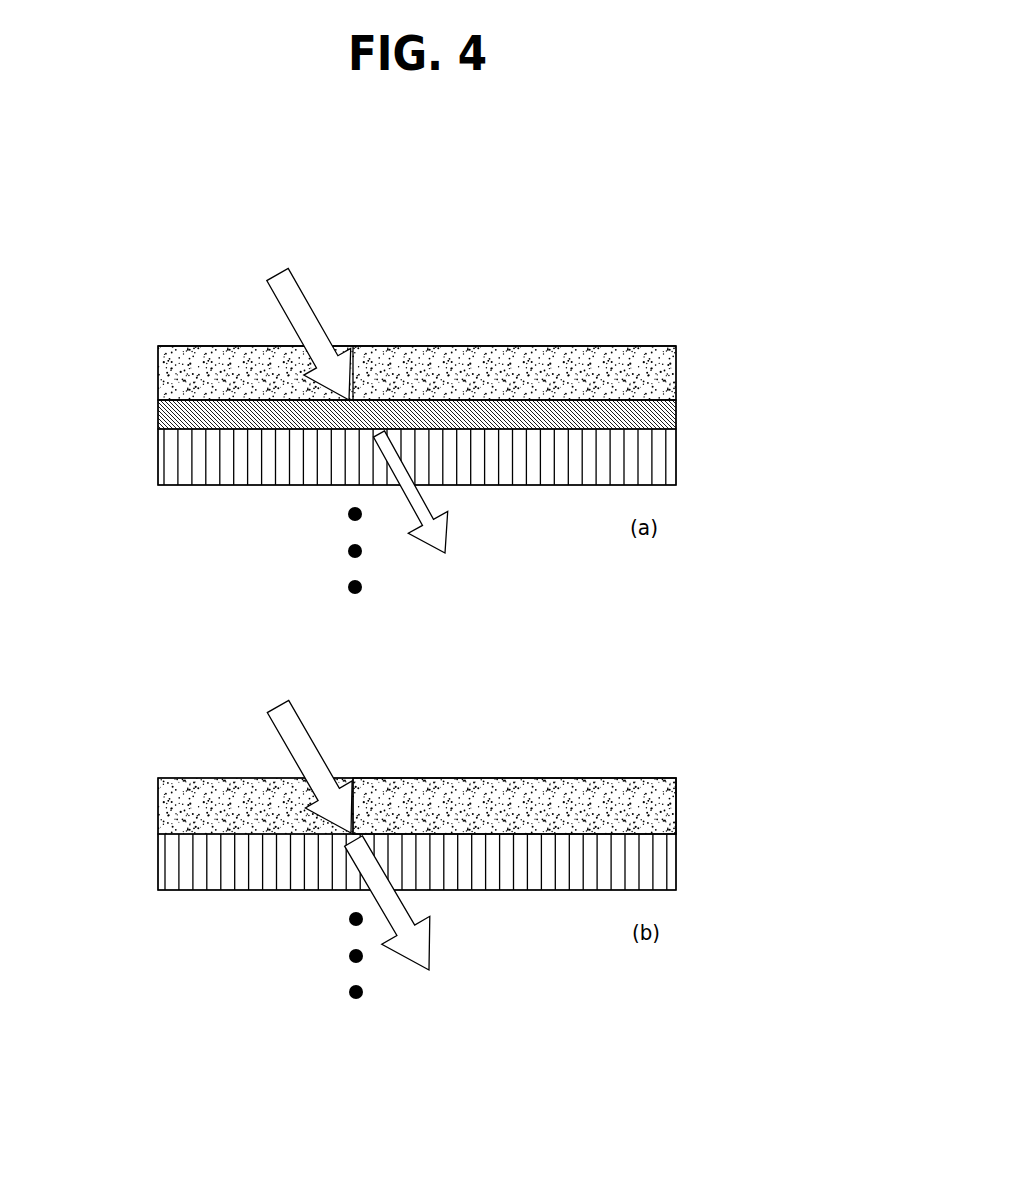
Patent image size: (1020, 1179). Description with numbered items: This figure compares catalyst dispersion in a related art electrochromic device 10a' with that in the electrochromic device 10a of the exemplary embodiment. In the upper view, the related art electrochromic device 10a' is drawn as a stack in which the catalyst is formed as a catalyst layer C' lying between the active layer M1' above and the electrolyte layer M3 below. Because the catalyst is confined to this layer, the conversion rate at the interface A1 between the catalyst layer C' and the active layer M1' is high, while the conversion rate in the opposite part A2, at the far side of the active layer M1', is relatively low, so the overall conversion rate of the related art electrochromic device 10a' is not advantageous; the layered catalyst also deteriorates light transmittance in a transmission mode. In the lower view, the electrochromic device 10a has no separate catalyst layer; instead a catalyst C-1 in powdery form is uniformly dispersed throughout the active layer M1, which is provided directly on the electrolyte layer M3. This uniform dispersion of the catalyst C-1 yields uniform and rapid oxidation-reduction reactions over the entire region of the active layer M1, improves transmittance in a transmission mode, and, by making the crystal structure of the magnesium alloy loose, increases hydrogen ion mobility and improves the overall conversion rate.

The related art electrochromic device 10a' is at (417, 361).
The opposite part A2 is at (157, 346).
The interface A1 is at (157, 400).
The active layer M1' is at (455, 373).
The catalyst layer C' is at (447, 414).
The electrolyte layer M3 is at (676, 457).
The electrochromic device 10a is at (417, 781).
The catalyst C-1 is at (578, 793).
The active layer M1 is at (452, 806).